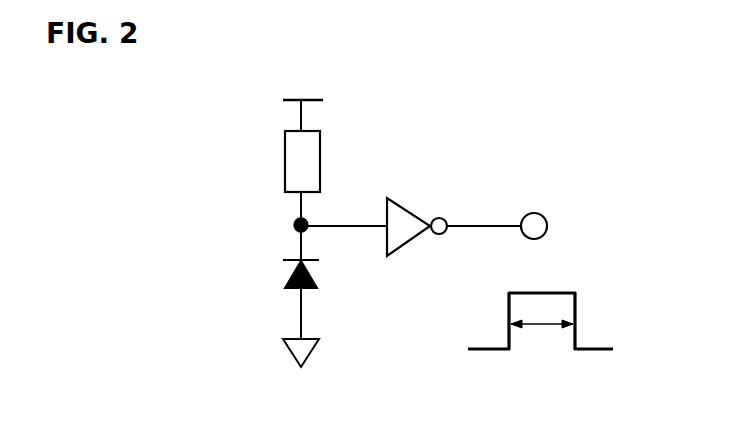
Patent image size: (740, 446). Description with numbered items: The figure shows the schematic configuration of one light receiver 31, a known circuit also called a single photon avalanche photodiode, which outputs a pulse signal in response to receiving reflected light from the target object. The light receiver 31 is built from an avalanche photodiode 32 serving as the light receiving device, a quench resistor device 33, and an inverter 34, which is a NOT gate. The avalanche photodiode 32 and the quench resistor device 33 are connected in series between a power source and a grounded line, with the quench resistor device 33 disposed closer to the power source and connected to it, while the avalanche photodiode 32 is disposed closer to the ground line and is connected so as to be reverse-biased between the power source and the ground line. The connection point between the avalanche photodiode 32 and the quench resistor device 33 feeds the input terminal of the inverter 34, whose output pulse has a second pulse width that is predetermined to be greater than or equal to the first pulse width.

The light receiver 31 is at (204, 122).
The avalanche photodiode 32 is at (288, 282).
The quench resistor device 33 is at (285, 161).
The inverter 34 is at (405, 200).